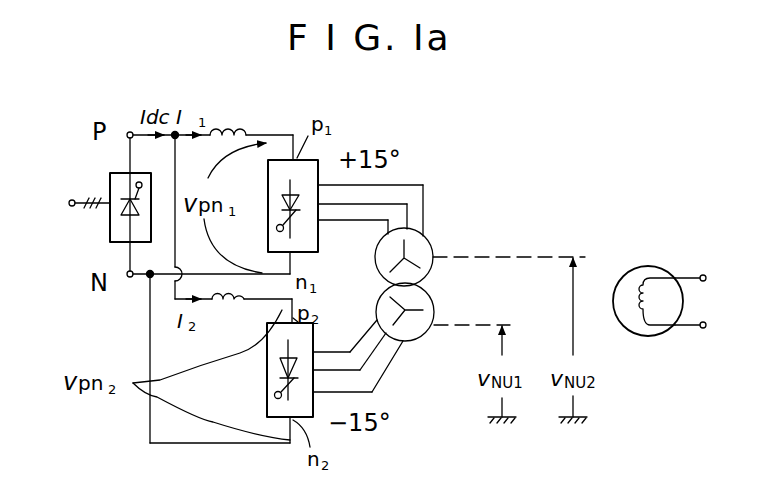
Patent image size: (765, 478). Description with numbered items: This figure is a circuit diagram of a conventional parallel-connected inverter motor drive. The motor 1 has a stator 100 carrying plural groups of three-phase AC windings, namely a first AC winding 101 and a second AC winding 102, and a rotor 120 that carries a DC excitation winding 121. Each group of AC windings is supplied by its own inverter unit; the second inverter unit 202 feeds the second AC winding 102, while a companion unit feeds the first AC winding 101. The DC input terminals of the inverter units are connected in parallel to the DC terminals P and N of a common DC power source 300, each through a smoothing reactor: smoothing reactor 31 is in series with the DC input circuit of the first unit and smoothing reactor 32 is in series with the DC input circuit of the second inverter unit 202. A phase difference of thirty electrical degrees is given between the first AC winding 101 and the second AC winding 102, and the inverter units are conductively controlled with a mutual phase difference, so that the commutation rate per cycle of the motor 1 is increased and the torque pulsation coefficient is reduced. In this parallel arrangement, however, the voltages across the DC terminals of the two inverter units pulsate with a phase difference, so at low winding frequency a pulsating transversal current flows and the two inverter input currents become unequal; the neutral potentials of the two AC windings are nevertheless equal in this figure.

The common DC power source 300 is at (110, 187).
The smoothing reactor 31 is at (236, 127).
The smoothing reactor 32 is at (229, 308).
The inverter unit 202 is at (267, 373).
The stator 100 is at (411, 306).
The first AC winding 101 is at (378, 258).
The second AC winding 102 is at (410, 339).
The motor 1 is at (510, 224).
The rotor 120 is at (659, 296).
The DC excitation winding 121 is at (637, 313).